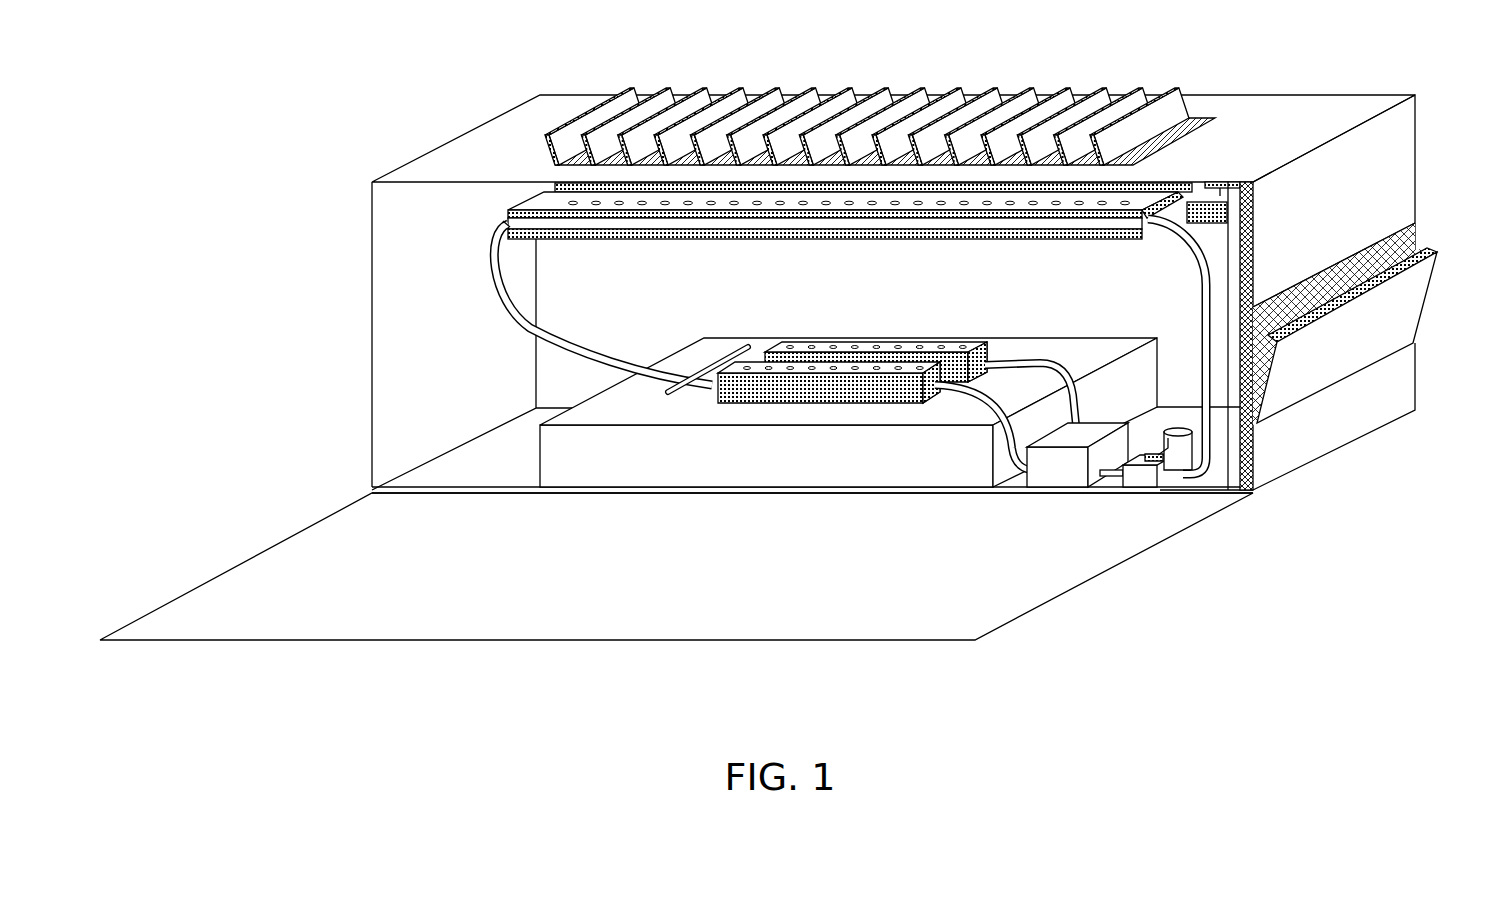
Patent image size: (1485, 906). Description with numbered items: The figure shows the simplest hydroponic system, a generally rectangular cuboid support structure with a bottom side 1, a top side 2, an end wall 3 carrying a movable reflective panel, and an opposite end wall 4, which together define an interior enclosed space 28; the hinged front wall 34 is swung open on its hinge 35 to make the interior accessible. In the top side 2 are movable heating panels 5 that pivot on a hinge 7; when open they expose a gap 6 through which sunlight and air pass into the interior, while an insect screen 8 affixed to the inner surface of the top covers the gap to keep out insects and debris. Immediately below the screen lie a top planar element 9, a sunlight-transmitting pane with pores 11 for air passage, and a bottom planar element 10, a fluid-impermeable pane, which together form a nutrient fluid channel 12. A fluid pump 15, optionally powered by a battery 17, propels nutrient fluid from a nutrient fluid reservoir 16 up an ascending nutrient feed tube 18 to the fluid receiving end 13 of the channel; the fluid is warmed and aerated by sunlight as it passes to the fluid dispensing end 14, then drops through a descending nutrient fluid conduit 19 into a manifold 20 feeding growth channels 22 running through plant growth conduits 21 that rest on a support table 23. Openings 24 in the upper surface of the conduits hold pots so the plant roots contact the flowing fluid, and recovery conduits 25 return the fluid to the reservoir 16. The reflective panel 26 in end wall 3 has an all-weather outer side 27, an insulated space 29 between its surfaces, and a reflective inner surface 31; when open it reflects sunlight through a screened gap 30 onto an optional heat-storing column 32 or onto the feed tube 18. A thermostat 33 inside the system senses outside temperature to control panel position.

The bottom side of support structure 1 is at (455, 468).
The top side of support structure 2 is at (1338, 112).
The end wall with moveable panel 3 is at (1247, 440).
The end wall opposite end wall 4 is at (392, 310).
The heating panels 5 is at (1021, 103).
The gap 6 is at (1160, 140).
The hinge 7 is at (1173, 120).
The insect screen 8 is at (556, 186).
The top planar element 9 is at (872, 230).
The bottom planar element 10 is at (692, 232).
The pores 11 is at (800, 207).
The nutrient fluid channel 12 is at (608, 223).
The fluid receiving end 13 is at (1160, 230).
The fluid dispensing end 14 is at (505, 230).
The fluid pump 15 is at (1140, 478).
The nutrient fluid reservoir 16 is at (1068, 476).
The battery 17 is at (1193, 447).
The ascending nutrient feed tube 18 is at (1213, 272).
The descending nutrient fluid conduit 19 is at (542, 298).
The manifold 20 is at (683, 393).
The plant growth conduits 21 is at (907, 357).
The growth channels 22 is at (990, 345).
The support table 23 is at (604, 472).
The openings in the upper surface 24 is at (792, 345).
The recovery conduits 25 is at (1075, 392).
The reflective panel 26 is at (1408, 308).
The outer side of end wall 27 is at (1405, 127).
The interior enclosed space 28 is at (983, 306).
The space between outer and inner surfaces of reflective panel 29 is at (1430, 248).
The gap covered by insect screen 30 is at (1407, 252).
The inner surface of panel 31 is at (1282, 326).
The column or container of heat-absorbing material 32 is at (1233, 483).
The thermostat 33 is at (1218, 215).
The front wall of support structure 34 is at (1002, 598).
The hinge of front wall 35 is at (1201, 496).